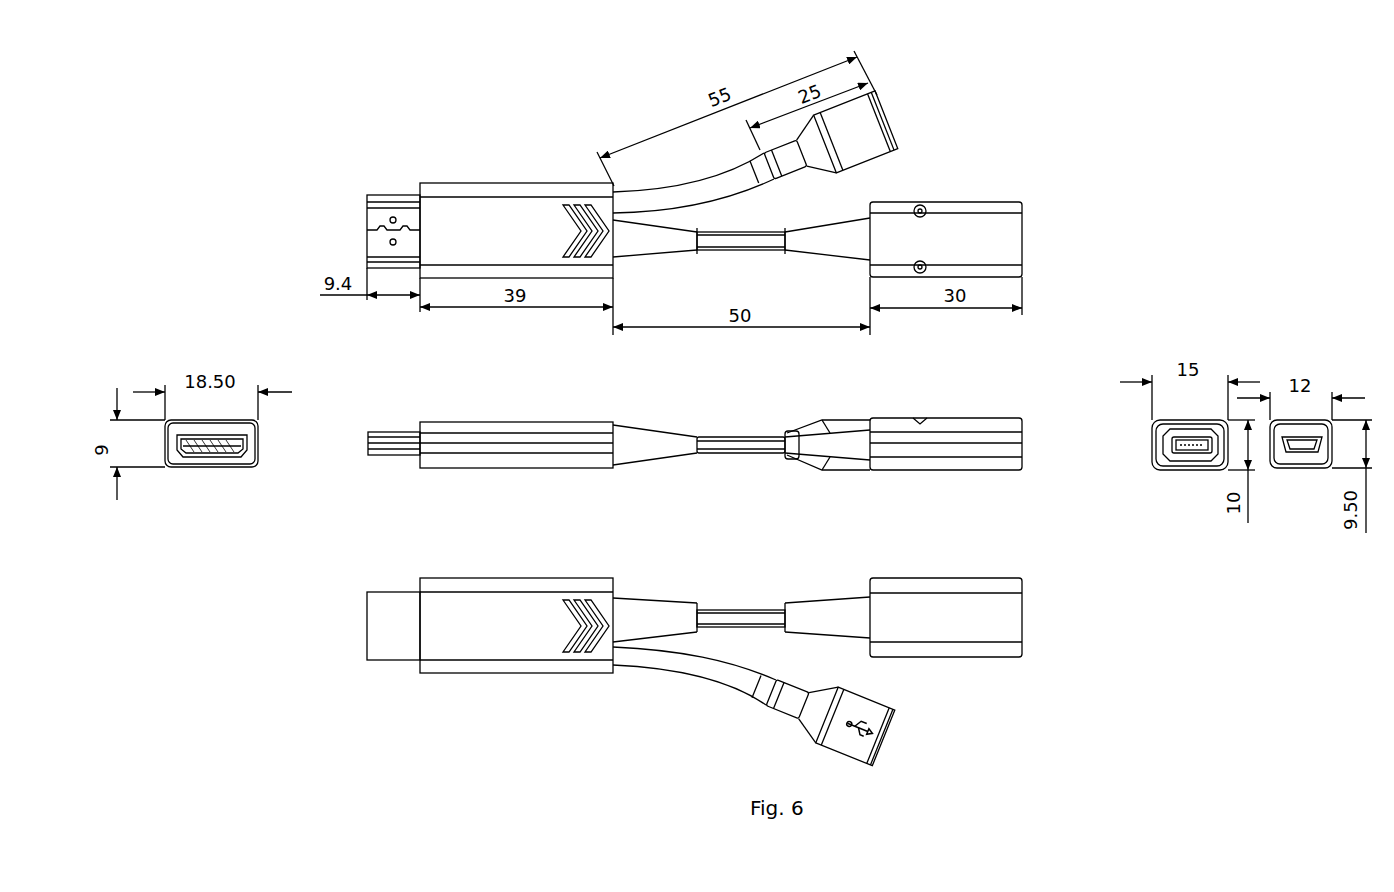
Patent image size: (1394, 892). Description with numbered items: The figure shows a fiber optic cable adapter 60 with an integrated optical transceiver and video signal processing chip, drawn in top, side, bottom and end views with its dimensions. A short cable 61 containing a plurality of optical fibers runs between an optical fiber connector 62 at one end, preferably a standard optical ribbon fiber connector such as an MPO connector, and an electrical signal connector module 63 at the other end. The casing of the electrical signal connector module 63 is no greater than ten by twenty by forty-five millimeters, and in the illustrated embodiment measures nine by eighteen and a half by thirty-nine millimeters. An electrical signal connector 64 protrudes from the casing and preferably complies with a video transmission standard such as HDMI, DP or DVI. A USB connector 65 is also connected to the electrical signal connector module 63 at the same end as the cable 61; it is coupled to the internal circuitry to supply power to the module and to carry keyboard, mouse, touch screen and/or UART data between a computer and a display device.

The fiber optic cable adapter 60 is at (157, 158).
The short cable 61 is at (720, 240).
The optical fiber connector 62 is at (992, 222).
The electrical signal connector module 63 is at (474, 207).
The electrical signal connector 64 is at (385, 195).
The USB connector 65 is at (875, 138).